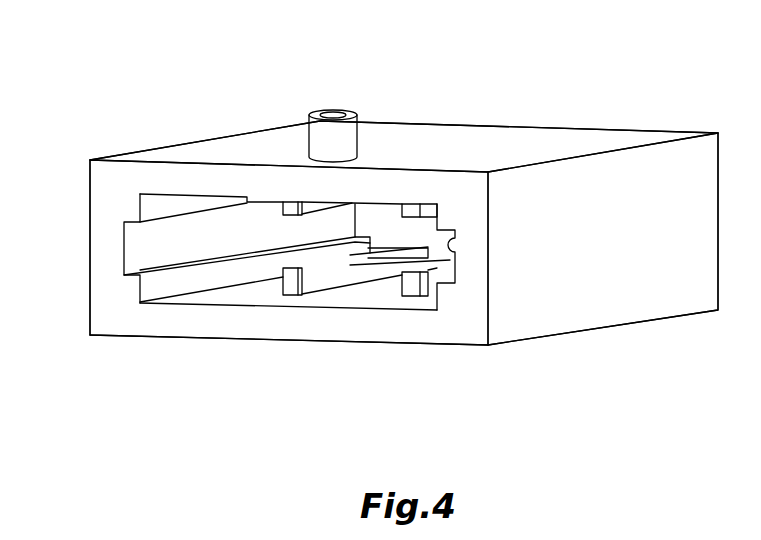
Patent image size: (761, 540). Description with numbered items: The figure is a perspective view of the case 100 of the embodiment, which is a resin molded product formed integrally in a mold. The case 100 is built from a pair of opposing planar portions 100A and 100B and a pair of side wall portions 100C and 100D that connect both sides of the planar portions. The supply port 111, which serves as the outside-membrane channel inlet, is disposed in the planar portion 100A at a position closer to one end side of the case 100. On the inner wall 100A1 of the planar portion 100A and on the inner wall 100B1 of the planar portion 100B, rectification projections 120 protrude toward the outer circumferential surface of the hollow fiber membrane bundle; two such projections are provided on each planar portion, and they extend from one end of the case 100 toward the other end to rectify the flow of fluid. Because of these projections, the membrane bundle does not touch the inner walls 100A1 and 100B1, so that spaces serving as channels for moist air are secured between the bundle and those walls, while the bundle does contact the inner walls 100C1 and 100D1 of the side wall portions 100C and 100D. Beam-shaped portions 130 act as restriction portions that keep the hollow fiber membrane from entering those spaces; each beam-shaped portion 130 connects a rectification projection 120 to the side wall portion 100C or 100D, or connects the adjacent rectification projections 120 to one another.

The case 100 is at (577, 84).
The planar portion 100A is at (302, 180).
The inner wall of planar portion 100A1 is at (188, 202).
The planar portion 100B is at (160, 323).
The inner wall of planar portion 100B1 is at (230, 297).
The side wall portion 100C is at (100, 258).
The inner wall of side wall portion 100C1 is at (143, 233).
The side wall portion 100D is at (468, 275).
The inner wall of side wall portion 100D1 is at (453, 250).
The supply port 111 is at (347, 140).
The rectification projection 120 is at (292, 207).
The beam-shaped portion 130 is at (265, 200).